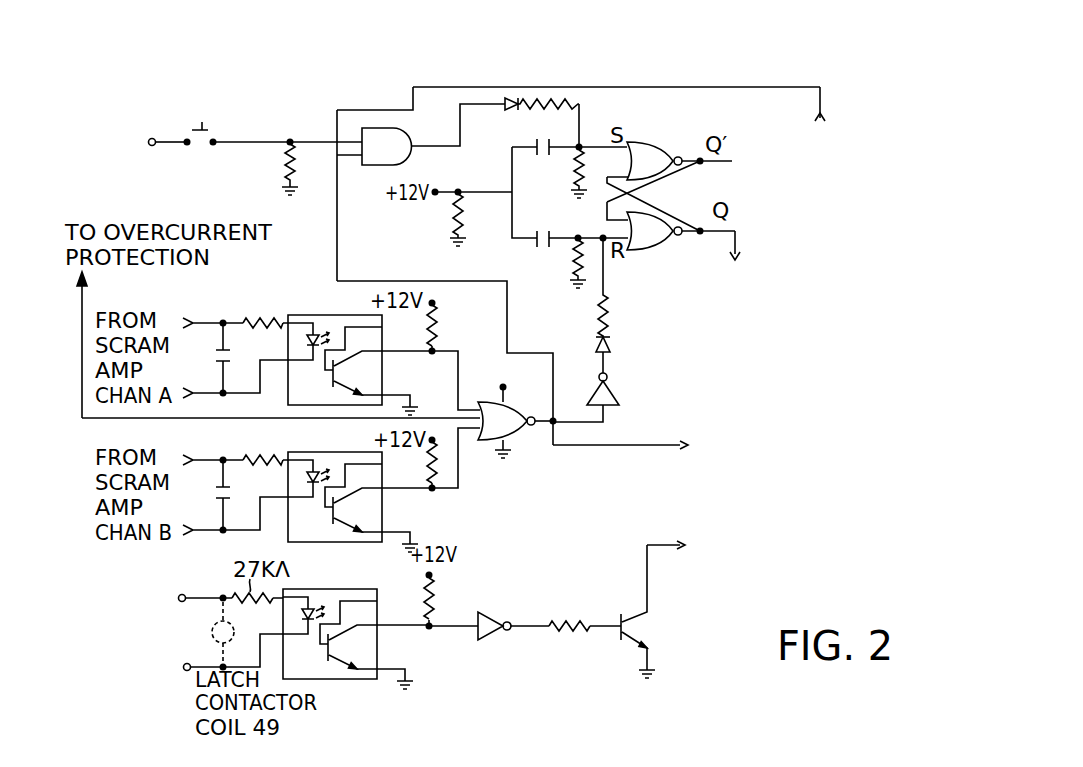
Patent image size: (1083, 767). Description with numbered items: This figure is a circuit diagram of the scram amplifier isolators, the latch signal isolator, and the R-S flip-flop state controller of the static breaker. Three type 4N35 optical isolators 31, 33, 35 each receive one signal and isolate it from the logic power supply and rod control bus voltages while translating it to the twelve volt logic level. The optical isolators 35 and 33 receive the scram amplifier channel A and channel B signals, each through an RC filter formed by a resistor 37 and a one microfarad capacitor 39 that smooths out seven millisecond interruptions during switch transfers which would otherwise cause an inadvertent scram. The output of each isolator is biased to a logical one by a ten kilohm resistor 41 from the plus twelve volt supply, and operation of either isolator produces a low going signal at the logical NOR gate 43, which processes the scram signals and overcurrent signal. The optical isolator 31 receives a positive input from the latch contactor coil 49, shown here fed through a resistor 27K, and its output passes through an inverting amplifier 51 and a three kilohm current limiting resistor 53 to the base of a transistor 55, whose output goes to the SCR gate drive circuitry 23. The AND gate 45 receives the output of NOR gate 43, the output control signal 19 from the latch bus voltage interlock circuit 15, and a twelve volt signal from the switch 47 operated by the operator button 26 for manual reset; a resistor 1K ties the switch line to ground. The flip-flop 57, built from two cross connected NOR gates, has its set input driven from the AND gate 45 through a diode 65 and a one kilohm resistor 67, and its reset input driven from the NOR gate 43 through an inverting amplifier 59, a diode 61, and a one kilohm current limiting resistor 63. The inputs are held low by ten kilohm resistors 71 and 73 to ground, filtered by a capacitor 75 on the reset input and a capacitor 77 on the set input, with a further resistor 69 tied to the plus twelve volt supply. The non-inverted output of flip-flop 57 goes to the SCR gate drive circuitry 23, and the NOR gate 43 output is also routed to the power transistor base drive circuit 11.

The operator button 26 is at (217, 97).
The switch 47 is at (201, 158).
The output control signal 19 is at (692, 87).
The latch bus voltage and interlock circuit 15 is at (872, 146).
The three input AND gate 45 is at (397, 158).
The 1K resistor 1K is at (306, 169).
The diode 65 is at (507, 97).
The 1K ohm resistor 67 is at (547, 98).
The 0.001 microfarad capacitor 77 is at (534, 158).
The 10K ohm resistor 73 is at (574, 176).
The resistor 69 is at (452, 214).
The 0.01 microfarad capacitor 75 is at (537, 246).
The 10K ohm resistor 71 is at (572, 290).
The 1K ohm current limiting resistor 63 is at (605, 303).
The diode 61 is at (610, 346).
The inverting amplifier 59 is at (617, 397).
The flip-flop 57 is at (662, 143).
The SCR and gate drive circuit 23 is at (792, 404).
The logical NOR gate 43 is at (519, 437).
The power bipolar transistor and base drive circuit 11 is at (755, 459).
The 8.1K ohm resistor 37 is at (250, 320).
The one microfarad capacitor 39 is at (213, 355).
The 10K ohm resistor 41 is at (435, 318).
The optical isolator 35 is at (303, 315).
The optical isolator 33 is at (323, 452).
The optical isolator circuit 31 is at (353, 679).
The 27K resistor 27K is at (252, 598).
The latch contactor coil 49 is at (212, 640).
The inverting amplifier 51 is at (497, 611).
The 3K ohm current limiting resistor 53 is at (559, 635).
The transistor 55 is at (640, 605).